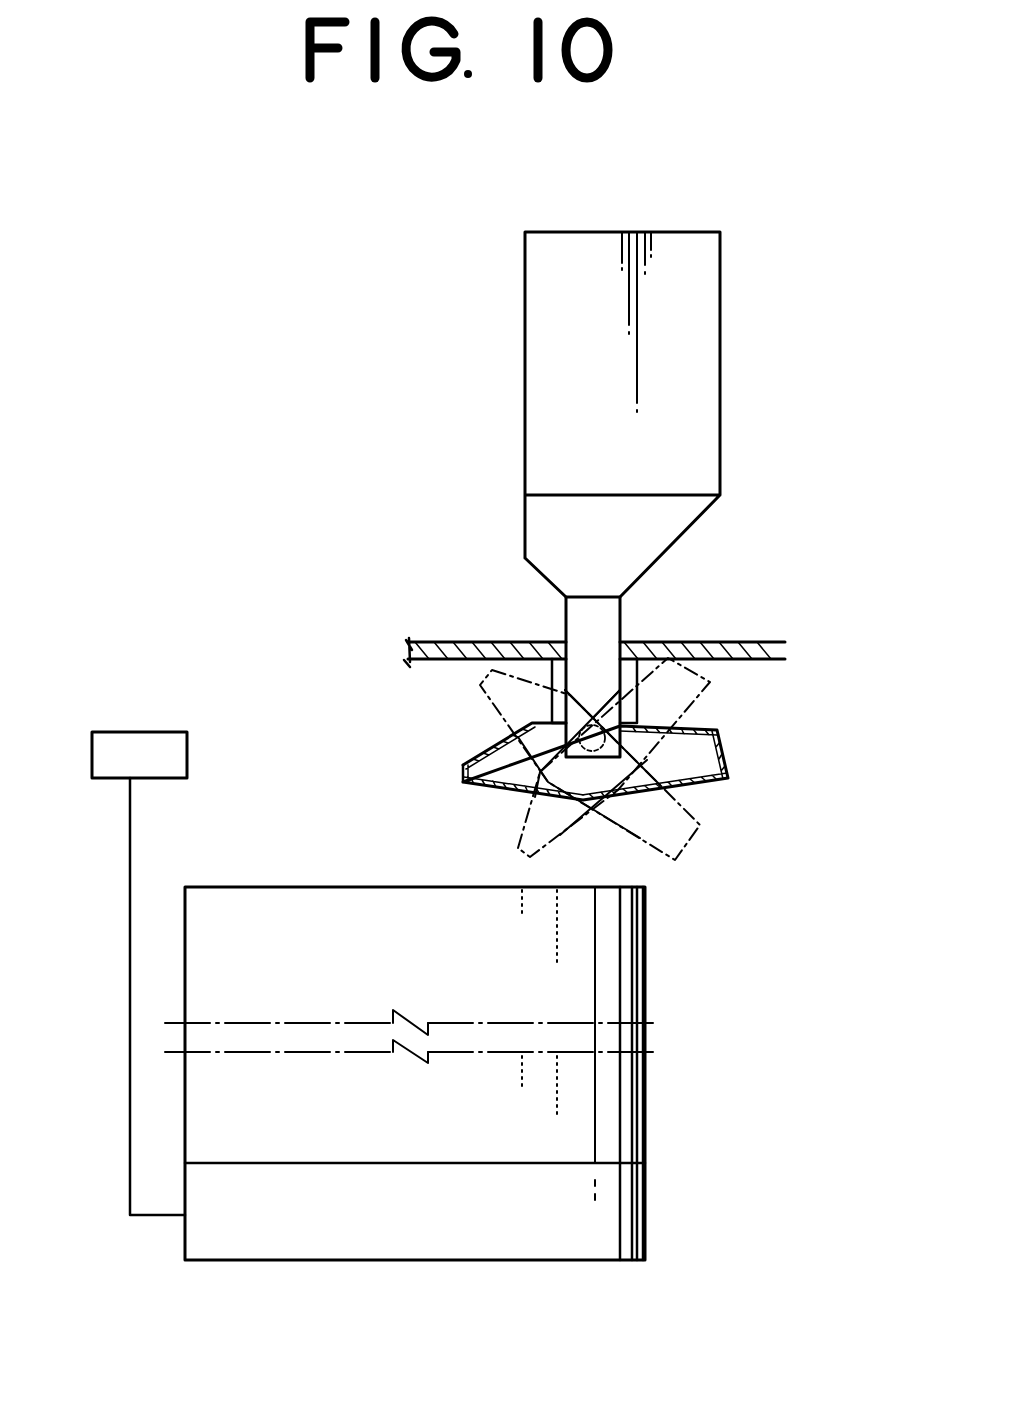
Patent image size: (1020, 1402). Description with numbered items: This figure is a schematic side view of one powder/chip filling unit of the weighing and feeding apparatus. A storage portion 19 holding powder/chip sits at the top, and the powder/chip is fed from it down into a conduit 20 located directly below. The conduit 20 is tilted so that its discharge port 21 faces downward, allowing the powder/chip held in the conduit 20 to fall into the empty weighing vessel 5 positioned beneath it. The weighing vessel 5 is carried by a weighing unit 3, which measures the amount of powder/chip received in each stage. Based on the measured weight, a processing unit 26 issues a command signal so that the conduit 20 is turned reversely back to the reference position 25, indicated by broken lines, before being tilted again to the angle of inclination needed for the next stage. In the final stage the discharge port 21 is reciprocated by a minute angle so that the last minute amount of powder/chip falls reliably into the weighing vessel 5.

The weighing unit 3 is at (617, 1212).
The weighing vessel 5 is at (628, 973).
The storage portion 19 is at (695, 370).
The conduit 20 is at (724, 756).
The discharge port 21 is at (462, 767).
The reference position 25 is at (678, 848).
The processing unit 26 is at (152, 745).